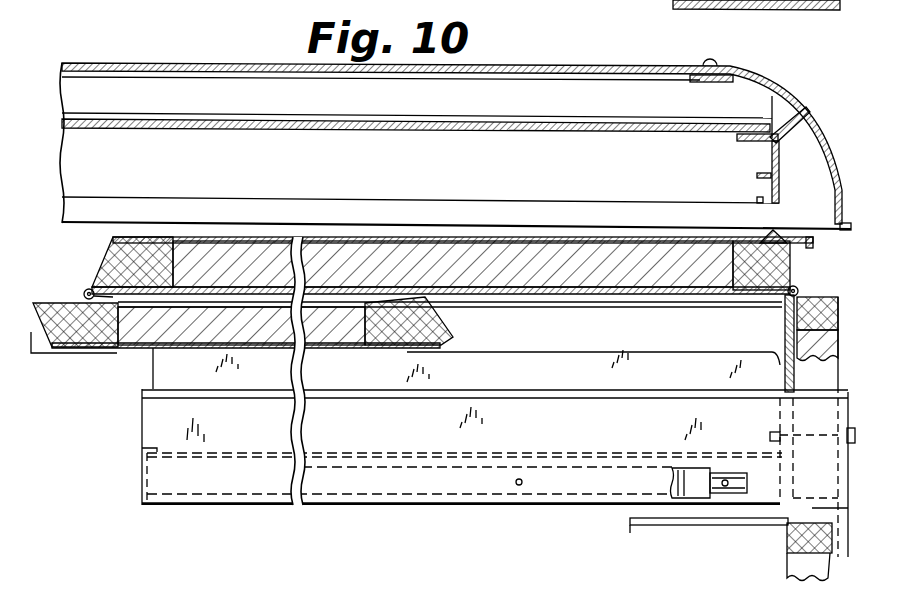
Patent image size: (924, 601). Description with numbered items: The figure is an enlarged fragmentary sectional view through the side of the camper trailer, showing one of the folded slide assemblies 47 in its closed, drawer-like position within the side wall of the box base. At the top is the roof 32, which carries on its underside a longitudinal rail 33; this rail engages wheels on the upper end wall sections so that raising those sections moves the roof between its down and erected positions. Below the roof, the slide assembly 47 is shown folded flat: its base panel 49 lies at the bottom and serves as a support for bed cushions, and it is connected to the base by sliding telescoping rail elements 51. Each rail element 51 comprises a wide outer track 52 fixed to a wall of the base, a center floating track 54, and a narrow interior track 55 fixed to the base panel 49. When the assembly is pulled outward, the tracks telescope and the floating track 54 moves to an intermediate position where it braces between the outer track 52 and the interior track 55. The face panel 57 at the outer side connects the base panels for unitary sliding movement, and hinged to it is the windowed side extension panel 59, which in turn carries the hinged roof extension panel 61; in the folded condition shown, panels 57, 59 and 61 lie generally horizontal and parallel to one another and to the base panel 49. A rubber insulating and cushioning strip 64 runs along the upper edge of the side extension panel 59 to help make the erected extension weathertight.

The roof 32 is at (632, 62).
The longitudinal rail 33 is at (763, 172).
The slide assembly 47 is at (849, 12).
The base panel 49 is at (767, 487).
The sliding telescoping rail element 51 is at (602, 514).
The wide outer track 52 is at (547, 485).
The center floating track 54 is at (685, 470).
The narrow interior track 55 is at (723, 475).
The face panel 57 is at (826, 348).
The windowed side extension panel 59 is at (618, 270).
The roof extension panel 61 is at (153, 328).
The rubber insulating and cushioning strip 64 is at (102, 260).